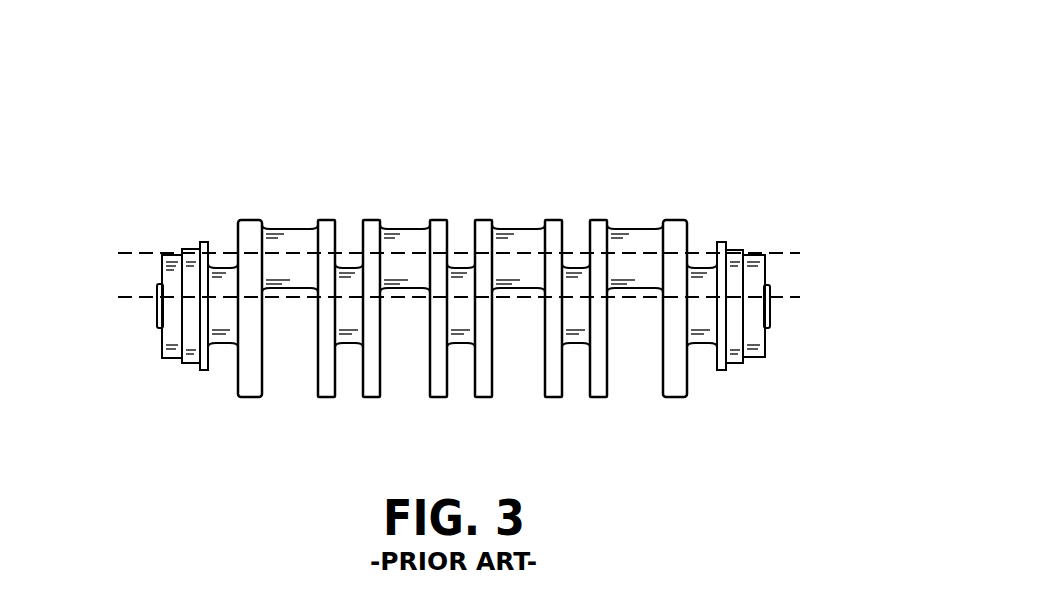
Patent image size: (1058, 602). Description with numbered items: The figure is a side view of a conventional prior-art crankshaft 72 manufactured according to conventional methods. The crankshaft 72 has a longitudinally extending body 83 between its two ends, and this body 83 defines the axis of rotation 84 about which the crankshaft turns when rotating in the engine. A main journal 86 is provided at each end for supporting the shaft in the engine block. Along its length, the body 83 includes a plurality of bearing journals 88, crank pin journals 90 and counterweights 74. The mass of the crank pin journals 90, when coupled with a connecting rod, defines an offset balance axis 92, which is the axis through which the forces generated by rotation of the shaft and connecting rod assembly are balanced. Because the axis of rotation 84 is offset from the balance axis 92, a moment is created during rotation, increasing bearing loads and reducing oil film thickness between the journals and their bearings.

The crankshaft 72 is at (709, 46).
The counterweights 74 is at (248, 396).
The body 83 is at (733, 147).
The axis of rotation 84 is at (123, 297).
The main journal 86 is at (175, 252).
The bearing journals 88 is at (228, 277).
The crank pin journals 90 is at (295, 238).
The balance axis 92 is at (122, 255).